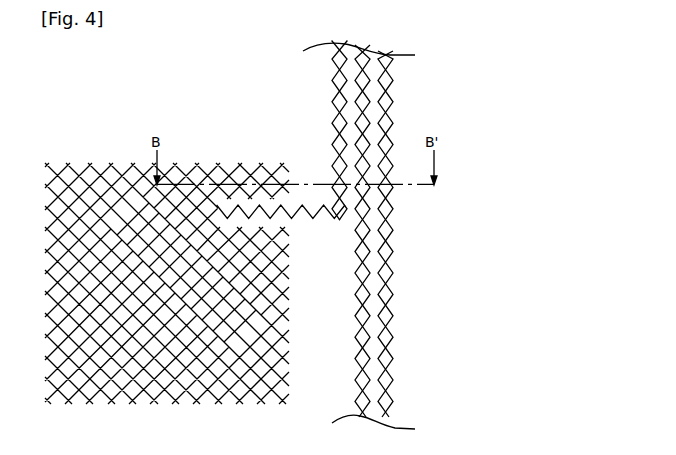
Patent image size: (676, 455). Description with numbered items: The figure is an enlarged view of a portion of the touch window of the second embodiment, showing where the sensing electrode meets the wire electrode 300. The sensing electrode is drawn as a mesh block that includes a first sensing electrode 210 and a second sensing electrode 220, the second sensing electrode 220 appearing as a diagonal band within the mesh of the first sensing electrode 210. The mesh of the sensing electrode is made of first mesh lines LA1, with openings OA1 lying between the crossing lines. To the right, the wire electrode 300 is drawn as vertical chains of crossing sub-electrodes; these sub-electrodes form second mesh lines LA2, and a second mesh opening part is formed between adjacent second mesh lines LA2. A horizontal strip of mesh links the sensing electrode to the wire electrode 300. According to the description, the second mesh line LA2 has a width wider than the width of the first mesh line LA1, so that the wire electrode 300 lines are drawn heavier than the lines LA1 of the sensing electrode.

The first sensing electrode 210 is at (222, 164).
The second sensing electrode 220 is at (103, 222).
The wire electrode 300 is at (342, 58).
The first mesh line LA1 is at (167, 387).
The second mesh line LA2 is at (333, 111).
The first opening area OA1 is at (208, 381).